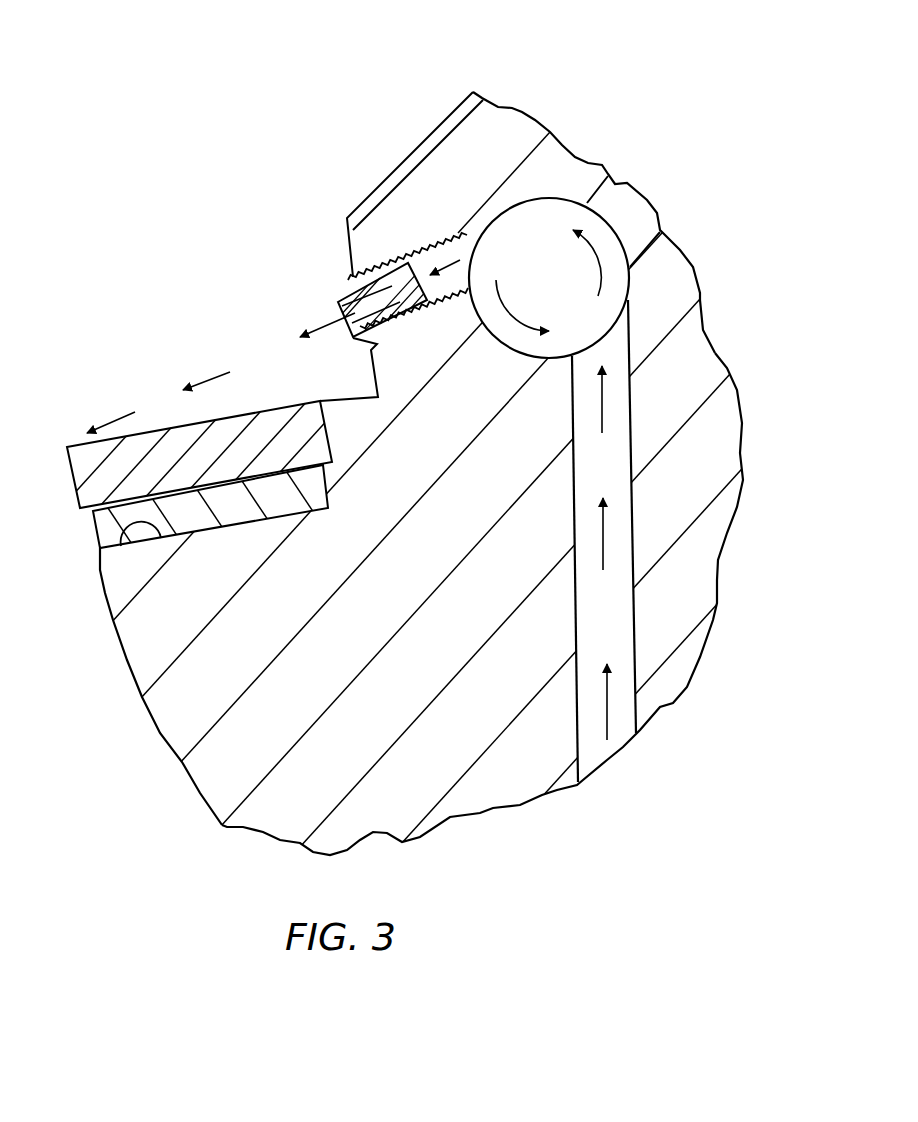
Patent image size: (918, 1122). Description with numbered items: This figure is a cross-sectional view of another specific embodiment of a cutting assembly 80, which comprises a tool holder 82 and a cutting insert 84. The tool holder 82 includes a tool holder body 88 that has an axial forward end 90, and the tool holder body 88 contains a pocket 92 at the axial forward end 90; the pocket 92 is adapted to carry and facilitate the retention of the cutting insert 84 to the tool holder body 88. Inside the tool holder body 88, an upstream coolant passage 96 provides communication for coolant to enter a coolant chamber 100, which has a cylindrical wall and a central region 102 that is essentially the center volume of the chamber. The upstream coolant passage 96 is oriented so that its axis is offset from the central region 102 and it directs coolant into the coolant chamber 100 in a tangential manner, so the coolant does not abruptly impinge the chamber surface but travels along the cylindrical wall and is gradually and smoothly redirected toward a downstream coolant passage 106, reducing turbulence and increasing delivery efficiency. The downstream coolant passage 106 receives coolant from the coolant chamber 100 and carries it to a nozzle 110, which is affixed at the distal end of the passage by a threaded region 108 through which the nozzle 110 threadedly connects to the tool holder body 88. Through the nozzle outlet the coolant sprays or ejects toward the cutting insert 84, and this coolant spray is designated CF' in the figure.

The cutting assembly 80 is at (550, 80).
The tool holder 82 is at (680, 400).
The cutting insert 84 is at (80, 511).
The tool holder body 88 is at (397, 601).
The axial forward end 90 is at (128, 668).
The pocket 92 is at (120, 550).
The upstream coolant passage 96 is at (607, 635).
The coolant chamber 100 is at (610, 222).
The central region 102 is at (570, 297).
The downstream coolant passage 106 is at (463, 240).
The threaded region 108 is at (398, 268).
The nozzle 110 is at (343, 297).